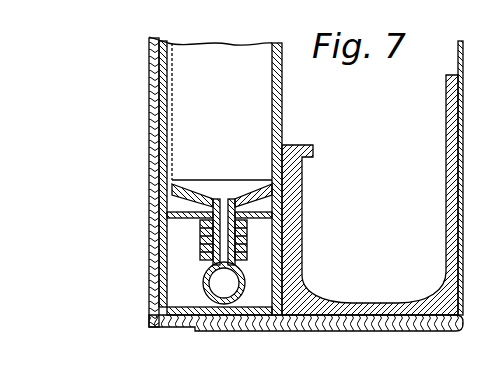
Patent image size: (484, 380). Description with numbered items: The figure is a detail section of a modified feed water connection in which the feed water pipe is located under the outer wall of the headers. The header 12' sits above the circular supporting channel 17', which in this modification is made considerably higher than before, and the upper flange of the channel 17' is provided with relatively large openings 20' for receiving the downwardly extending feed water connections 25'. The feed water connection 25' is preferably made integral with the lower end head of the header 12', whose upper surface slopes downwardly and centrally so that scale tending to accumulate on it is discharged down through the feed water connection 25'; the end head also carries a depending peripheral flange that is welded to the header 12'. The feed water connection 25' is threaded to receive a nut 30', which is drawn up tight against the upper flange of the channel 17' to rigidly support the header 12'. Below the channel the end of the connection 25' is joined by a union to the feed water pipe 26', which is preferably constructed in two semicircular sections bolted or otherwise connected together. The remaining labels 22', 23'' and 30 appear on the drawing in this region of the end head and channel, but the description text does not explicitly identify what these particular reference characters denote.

The header 12' is at (132, 182).
The funnel deflector 22' is at (222, 170).
The discharge tube 23'' is at (222, 206).
The openings 20' is at (188, 231).
The feed water connection 25' is at (167, 254).
The nut 30' is at (372, 178).
The partition wall 30 is at (306, 179).
The circular supporting channel 17' is at (291, 238).
The feed water pipe 26' is at (273, 278).